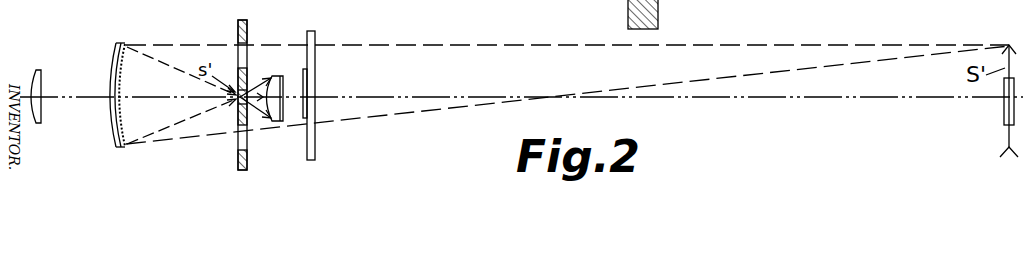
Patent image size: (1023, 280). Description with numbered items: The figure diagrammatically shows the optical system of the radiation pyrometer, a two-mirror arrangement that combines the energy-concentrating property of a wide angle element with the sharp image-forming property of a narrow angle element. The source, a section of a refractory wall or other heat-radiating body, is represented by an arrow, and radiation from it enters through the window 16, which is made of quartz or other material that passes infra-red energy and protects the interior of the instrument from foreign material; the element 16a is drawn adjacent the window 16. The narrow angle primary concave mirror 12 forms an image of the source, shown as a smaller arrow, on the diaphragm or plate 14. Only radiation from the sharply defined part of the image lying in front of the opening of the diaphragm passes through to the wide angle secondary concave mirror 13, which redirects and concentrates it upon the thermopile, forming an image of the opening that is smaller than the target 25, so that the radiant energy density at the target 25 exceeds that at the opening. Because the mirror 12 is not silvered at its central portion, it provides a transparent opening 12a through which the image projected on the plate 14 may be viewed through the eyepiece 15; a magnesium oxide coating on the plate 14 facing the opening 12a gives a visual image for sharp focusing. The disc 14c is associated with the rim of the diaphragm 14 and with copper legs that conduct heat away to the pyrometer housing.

The concave mirror 12 is at (121, 70).
The transparent opening 12a is at (120, 102).
The concave mirror 13 is at (278, 121).
The diaphragm 14 is at (238, 27).
The disc 14c is at (243, 83).
The eyepiece 15 is at (42, 83).
The window 16 is at (313, 38).
The element on plate 16a is at (305, 91).
The target 25 is at (262, 99).